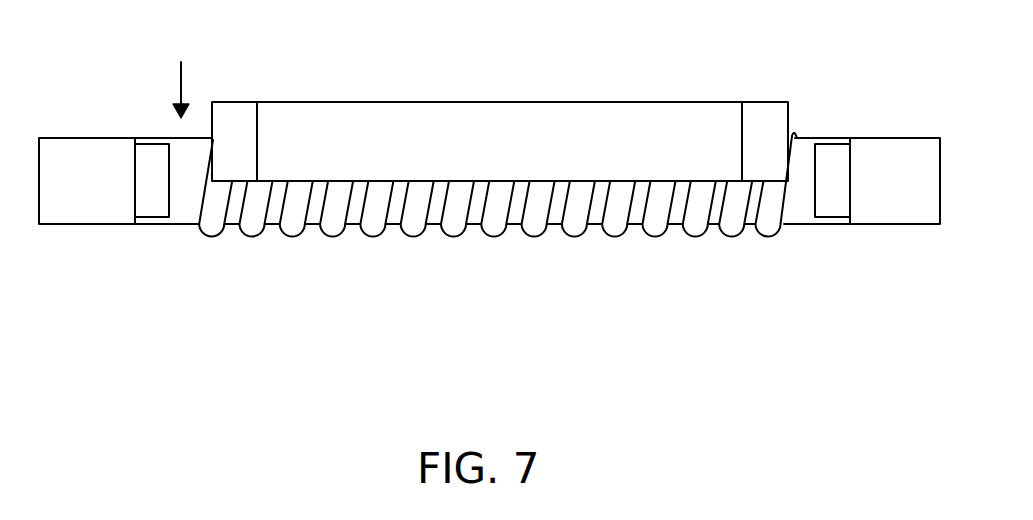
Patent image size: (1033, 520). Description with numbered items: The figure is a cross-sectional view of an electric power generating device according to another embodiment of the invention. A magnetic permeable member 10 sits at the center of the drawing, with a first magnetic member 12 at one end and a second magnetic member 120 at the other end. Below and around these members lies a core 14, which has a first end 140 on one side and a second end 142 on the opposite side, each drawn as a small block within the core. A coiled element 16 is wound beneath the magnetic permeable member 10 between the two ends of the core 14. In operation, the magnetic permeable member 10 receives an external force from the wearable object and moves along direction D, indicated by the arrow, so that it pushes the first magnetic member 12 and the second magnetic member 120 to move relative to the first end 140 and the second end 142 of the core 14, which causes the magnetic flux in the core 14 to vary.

The magnetic permeable member 10 is at (522, 102).
The first magnetic member 12 is at (245, 102).
The second magnetic member 120 is at (780, 102).
The core 14 is at (72, 137).
The first end 140 is at (152, 210).
The second end 142 is at (835, 210).
The coil spring 16 is at (613, 237).
The direction D is at (180, 68).